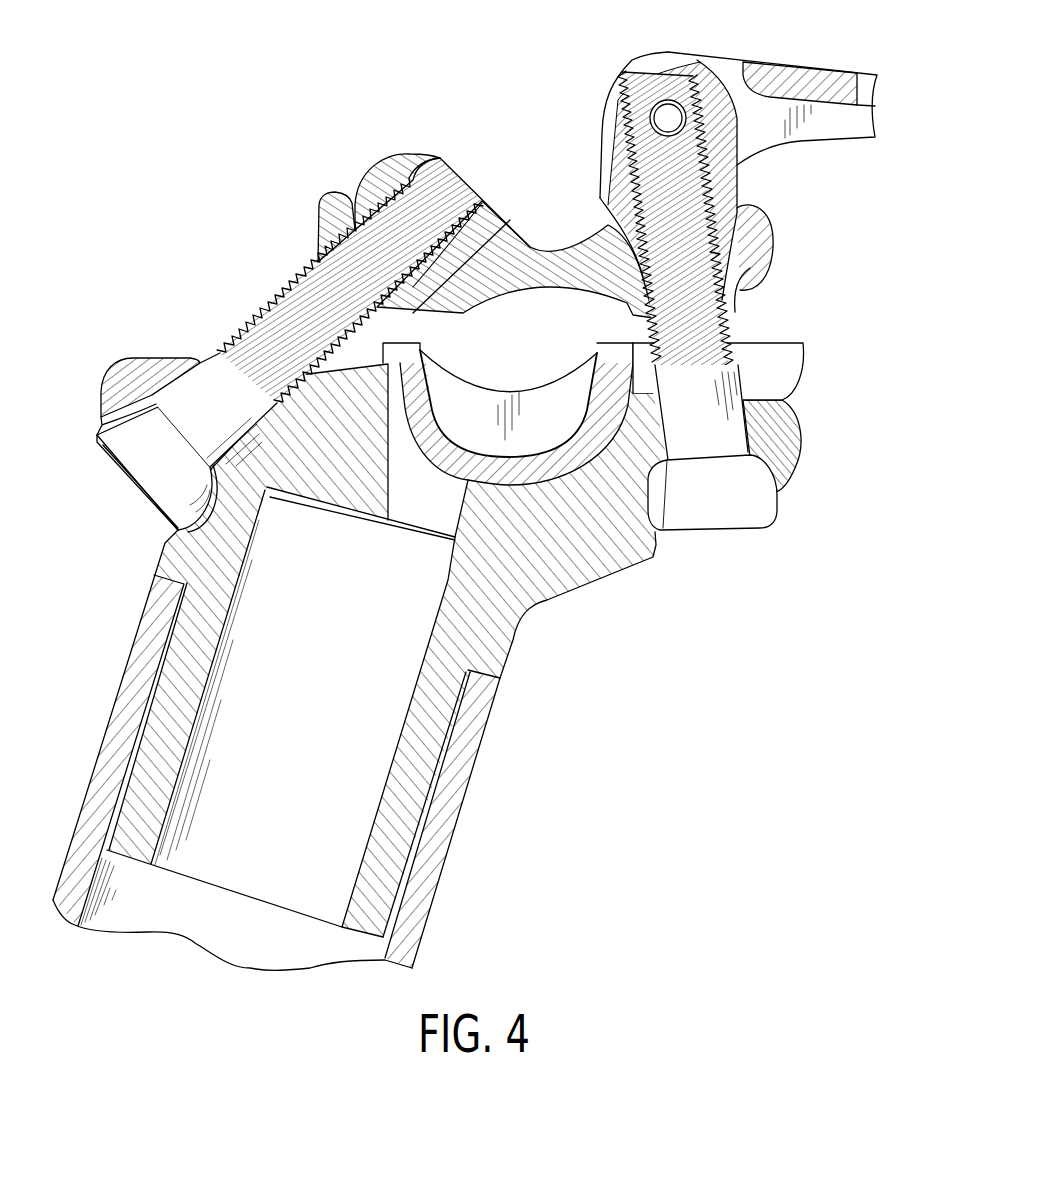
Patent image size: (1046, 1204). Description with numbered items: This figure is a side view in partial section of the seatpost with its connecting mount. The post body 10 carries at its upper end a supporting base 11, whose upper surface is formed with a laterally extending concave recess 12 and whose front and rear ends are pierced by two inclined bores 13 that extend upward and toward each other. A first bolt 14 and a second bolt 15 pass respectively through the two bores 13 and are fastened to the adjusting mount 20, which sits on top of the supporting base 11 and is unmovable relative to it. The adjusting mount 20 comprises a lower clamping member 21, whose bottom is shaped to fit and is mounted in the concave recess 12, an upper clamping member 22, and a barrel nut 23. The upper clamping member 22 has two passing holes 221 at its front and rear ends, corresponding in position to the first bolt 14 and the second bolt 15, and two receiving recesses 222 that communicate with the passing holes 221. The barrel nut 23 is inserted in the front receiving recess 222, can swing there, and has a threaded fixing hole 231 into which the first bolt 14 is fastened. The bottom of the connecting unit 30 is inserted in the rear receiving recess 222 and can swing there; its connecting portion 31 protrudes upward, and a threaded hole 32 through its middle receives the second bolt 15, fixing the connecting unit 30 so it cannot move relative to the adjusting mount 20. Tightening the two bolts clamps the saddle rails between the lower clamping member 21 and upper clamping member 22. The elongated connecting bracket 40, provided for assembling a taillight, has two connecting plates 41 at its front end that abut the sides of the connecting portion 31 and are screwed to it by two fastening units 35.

The post body 10 is at (360, 656).
The supporting base 11 is at (518, 580).
The concave recess 12 is at (404, 415).
The bores 13 is at (185, 372).
The first bolt 14 is at (262, 318).
The second bolt 15 is at (706, 508).
The adjusting mount 20 is at (577, 238).
The lower clamping member 21 is at (770, 375).
The upper clamping member 22 is at (549, 306).
The barrel nut 23 is at (411, 209).
The connecting unit 30 is at (702, 230).
The connecting portion 31 is at (722, 172).
The threaded hole 32 is at (668, 77).
The fastening units 35 is at (652, 112).
The connecting bracket 40 is at (730, 99).
The connecting plates 41 is at (642, 62).
The passing holes 221 is at (745, 303).
The receiving recesses 222 is at (600, 235).
The fixing hole 231 is at (440, 186).